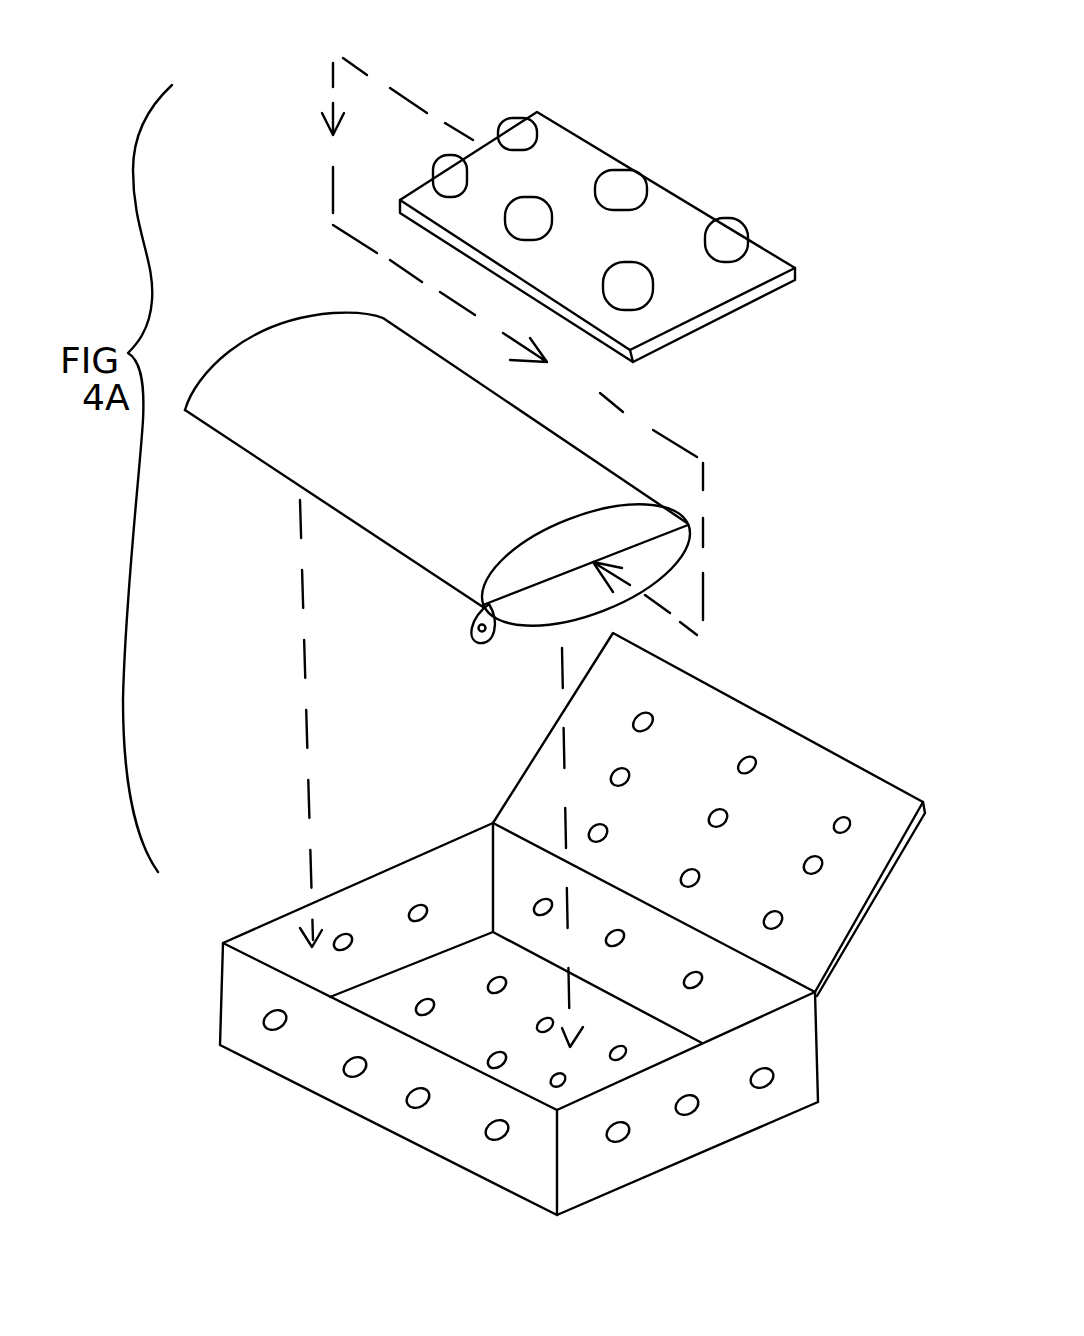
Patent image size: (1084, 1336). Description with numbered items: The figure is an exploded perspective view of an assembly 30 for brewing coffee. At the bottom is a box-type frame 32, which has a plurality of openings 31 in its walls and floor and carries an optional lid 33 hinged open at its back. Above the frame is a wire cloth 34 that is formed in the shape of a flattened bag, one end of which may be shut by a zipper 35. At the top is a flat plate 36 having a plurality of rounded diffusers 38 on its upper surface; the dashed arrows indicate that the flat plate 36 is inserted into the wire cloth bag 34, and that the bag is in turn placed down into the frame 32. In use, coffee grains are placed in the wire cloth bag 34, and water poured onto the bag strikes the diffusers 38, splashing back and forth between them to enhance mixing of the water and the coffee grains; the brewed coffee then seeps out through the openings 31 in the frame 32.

The assembly 30 is at (860, 590).
The openings 31 is at (418, 1102).
The box-type frame 32 is at (797, 1047).
The lid 33 is at (837, 917).
The wire cloth 34 is at (573, 471).
The zipper 35 is at (517, 590).
The flat plate 36 is at (653, 235).
The diffusers 38 is at (514, 124).